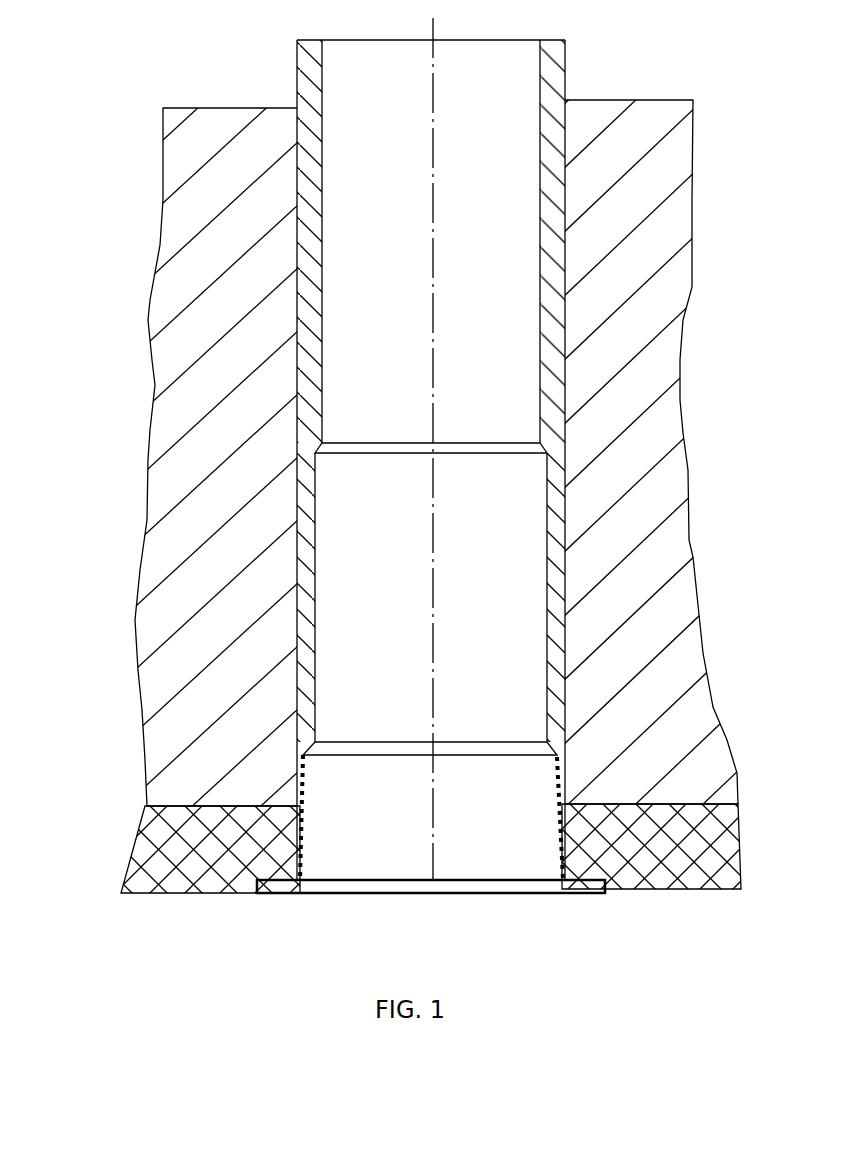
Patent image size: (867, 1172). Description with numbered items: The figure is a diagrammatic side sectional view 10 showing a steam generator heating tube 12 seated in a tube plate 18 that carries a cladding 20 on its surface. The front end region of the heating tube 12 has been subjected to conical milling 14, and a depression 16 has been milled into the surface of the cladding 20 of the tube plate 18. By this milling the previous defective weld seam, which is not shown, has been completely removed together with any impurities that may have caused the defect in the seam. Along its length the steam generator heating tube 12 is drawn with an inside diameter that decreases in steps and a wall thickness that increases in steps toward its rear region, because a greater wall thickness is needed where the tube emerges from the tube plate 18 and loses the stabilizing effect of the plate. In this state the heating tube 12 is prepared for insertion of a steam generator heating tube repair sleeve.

The view 10 is at (791, 969).
The steam generator heating tube 12 is at (553, 247).
The conical milling 14 is at (305, 782).
The depression 16 is at (352, 887).
The tube plate 18 is at (207, 463).
The cladding 20 is at (142, 851).